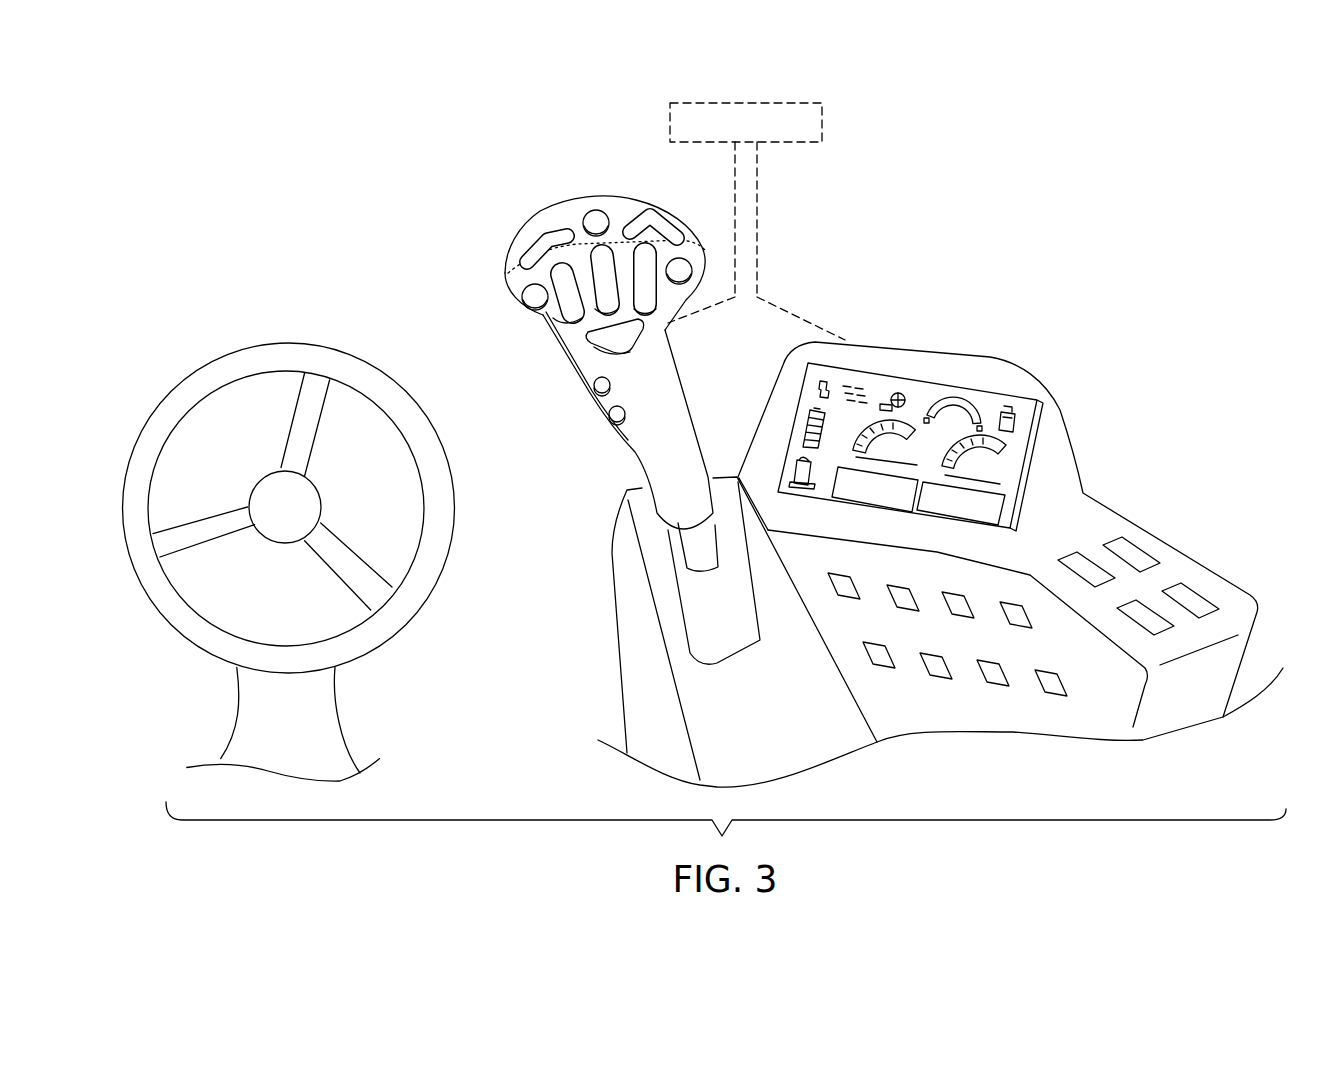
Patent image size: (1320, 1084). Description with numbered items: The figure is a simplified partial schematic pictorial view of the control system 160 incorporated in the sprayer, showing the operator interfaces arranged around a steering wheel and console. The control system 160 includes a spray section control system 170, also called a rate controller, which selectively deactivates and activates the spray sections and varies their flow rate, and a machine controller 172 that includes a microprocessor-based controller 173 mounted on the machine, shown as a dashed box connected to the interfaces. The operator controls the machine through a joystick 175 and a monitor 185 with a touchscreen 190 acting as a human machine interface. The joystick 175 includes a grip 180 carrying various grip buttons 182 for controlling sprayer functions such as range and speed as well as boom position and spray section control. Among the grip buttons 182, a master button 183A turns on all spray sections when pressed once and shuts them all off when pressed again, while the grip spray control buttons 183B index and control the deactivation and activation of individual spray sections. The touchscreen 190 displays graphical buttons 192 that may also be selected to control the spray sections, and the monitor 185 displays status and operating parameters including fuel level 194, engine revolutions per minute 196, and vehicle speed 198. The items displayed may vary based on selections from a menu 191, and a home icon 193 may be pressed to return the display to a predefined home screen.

The control system 160 is at (425, 173).
The spray section control system 170 is at (603, 183).
The machine controller 172 is at (1057, 228).
The microprocessor-based controller 173 is at (823, 130).
The joystick 175 is at (557, 452).
The grip 180 is at (664, 394).
The grip buttons 182 is at (563, 307).
The master button 183A is at (598, 335).
The grip spray control buttons 183B is at (570, 216).
The monitor 185 is at (1050, 457).
The touchscreen 190 is at (1013, 473).
The menu 191 is at (862, 383).
The graphical buttons 192 is at (1012, 408).
The home icon 193 is at (823, 385).
The fuel level 194 is at (798, 497).
The engine revolutions per minute 196 is at (890, 510).
The vehicle speed 198 is at (1007, 512).